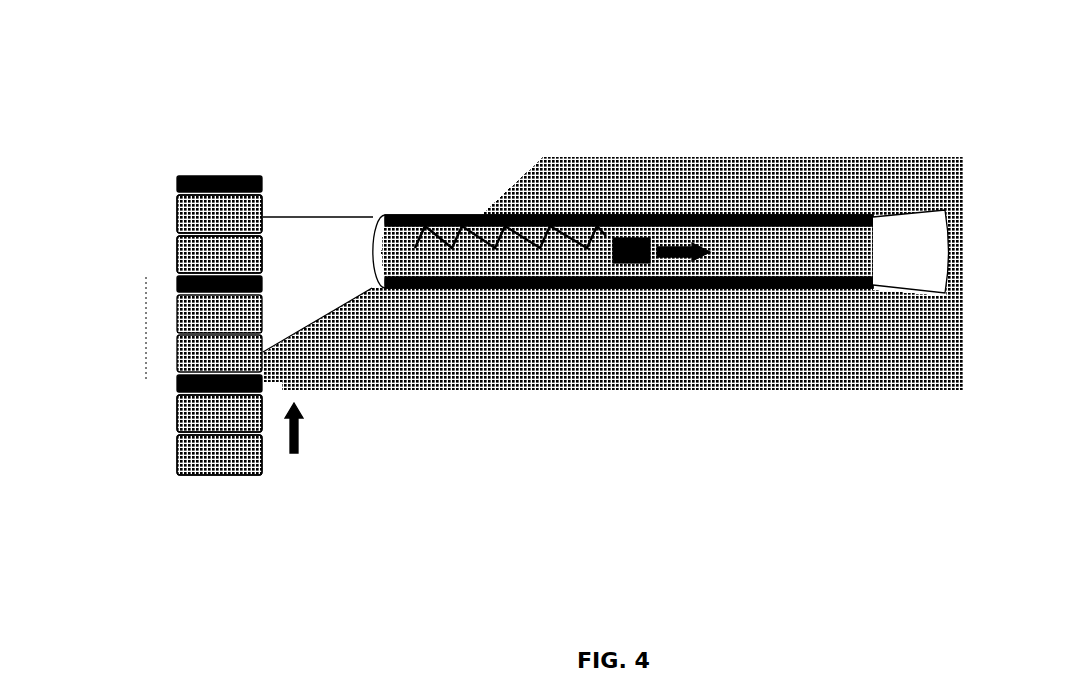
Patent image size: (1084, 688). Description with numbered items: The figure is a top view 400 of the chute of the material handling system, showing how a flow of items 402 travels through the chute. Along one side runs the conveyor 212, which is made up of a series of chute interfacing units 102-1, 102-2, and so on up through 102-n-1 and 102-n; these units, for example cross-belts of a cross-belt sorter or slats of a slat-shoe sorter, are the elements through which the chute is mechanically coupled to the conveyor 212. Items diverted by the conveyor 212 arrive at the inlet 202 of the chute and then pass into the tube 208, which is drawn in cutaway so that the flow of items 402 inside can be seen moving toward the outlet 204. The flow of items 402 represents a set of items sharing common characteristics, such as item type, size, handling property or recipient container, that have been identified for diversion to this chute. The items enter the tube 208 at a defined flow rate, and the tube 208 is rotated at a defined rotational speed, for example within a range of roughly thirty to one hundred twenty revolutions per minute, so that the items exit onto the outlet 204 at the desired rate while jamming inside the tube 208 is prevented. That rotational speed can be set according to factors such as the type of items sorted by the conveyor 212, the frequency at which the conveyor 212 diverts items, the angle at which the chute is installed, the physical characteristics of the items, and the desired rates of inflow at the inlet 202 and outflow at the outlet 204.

The top view 400 is at (106, 52).
The conveyor 212 is at (220, 173).
The chute interfacing unit 102-n is at (191, 214).
The chute interfacing unit 102-n-1 is at (180, 254).
The chute interfacing unit 102-2 is at (191, 413).
The chute interfacing unit 102-1 is at (191, 455).
The inlet 202 is at (303, 237).
The tube 208 is at (577, 215).
The flow of items 402 is at (508, 260).
The outlet 204 is at (892, 220).